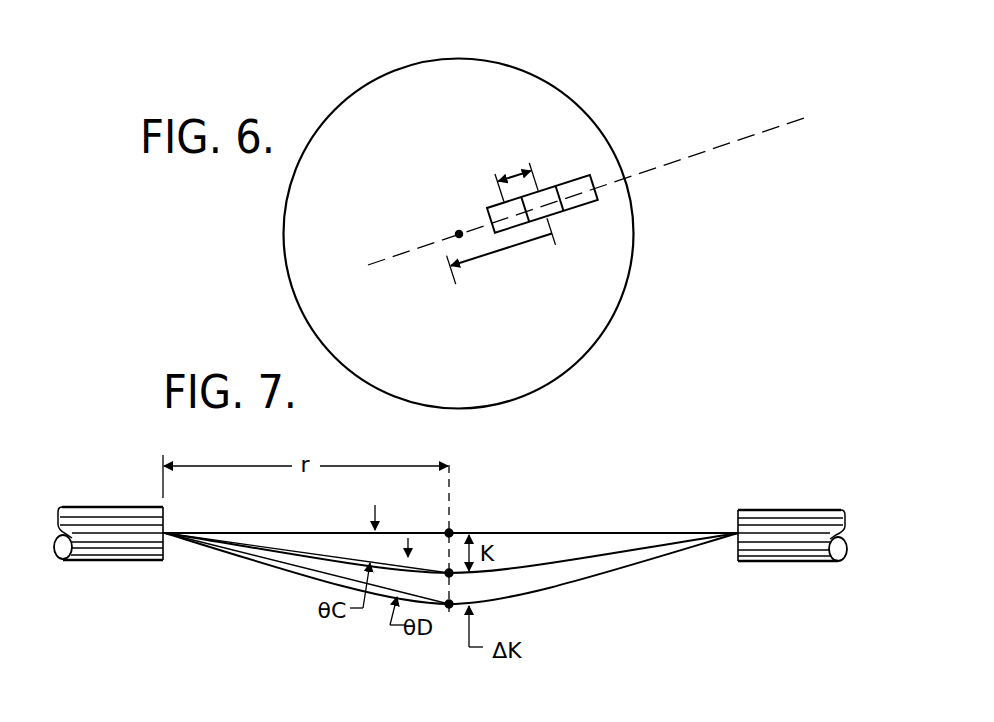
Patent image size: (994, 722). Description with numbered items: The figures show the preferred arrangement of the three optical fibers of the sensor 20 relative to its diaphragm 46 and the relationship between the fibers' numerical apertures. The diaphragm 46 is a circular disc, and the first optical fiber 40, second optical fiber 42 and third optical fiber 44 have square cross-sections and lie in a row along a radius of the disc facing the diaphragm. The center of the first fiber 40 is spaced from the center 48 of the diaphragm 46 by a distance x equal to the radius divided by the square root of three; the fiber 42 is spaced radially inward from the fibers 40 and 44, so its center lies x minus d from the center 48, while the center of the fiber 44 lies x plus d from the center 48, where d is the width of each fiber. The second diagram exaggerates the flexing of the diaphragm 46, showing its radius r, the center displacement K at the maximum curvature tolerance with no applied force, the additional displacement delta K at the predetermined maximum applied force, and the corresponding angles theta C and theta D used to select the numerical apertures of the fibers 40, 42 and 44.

In FIG. 6, the sensor 20 is at (599, 92).
In FIG. 6, the first optical fiber 40 is at (548, 216).
In FIG. 6, the second optical fiber 42 is at (487, 210).
In FIG. 6, the third optical fiber 44 is at (569, 183).
In FIG. 6, the diaphragm 46 is at (631, 212).
In FIG. 7, the diaphragm 46 is at (574, 585).
In FIG. 6, the center of the diaphragm 48 is at (459, 234).
In FIG. 7, the center of the diaphragm 48 is at (449, 603).